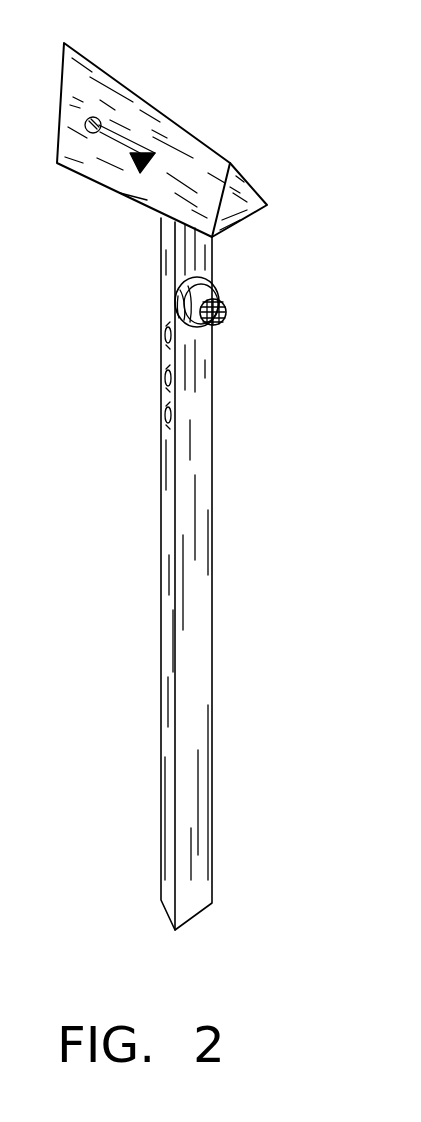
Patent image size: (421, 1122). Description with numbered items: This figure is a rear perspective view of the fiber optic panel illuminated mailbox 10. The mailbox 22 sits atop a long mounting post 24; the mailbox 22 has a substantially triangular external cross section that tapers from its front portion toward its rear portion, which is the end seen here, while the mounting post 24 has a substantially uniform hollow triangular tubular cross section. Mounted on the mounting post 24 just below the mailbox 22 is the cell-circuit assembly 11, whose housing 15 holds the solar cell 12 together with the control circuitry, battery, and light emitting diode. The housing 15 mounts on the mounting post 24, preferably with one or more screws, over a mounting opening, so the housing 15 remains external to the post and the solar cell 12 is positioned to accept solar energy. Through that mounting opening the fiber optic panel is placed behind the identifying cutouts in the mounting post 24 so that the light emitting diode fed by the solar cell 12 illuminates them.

The fiber optic panel illuminated mailbox 10 is at (233, 87).
The mailbox 22 is at (250, 185).
The mounting post 24 is at (197, 540).
The cell-circuit assembly 11 is at (228, 286).
The solar cell 12 is at (228, 310).
The housing 15 is at (178, 300).